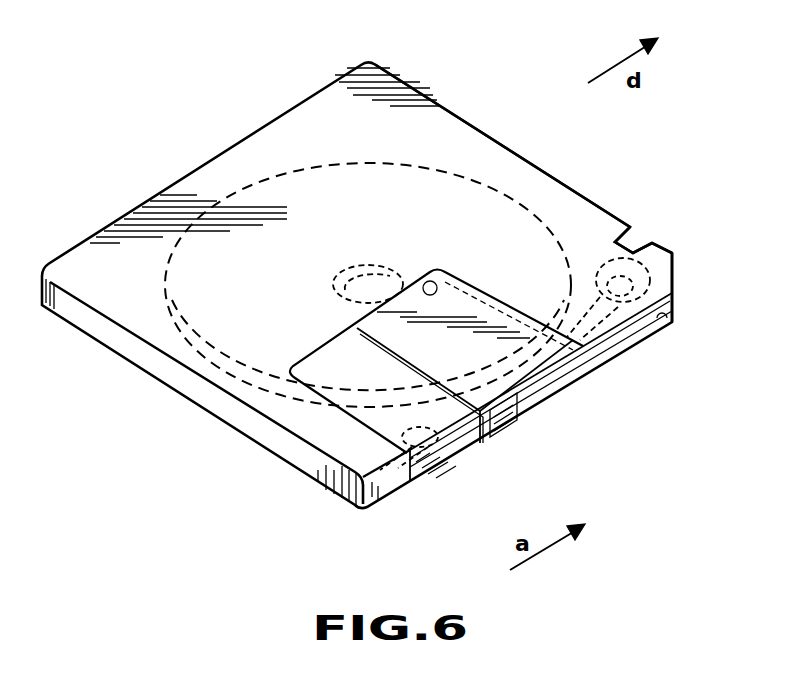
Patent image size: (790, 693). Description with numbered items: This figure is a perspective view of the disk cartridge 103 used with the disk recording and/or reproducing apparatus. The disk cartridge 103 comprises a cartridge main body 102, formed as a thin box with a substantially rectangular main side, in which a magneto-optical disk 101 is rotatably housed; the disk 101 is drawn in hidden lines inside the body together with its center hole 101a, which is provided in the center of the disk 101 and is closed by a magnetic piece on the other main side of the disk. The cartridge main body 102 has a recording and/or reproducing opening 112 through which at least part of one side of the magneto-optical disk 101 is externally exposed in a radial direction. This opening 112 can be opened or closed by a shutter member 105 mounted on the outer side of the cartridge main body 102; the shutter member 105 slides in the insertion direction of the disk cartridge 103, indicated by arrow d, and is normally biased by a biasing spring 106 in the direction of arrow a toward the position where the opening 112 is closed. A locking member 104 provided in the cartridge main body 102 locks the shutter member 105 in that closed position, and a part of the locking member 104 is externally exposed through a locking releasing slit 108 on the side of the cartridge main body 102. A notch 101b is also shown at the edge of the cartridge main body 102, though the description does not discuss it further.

The magneto-optical disk 101 is at (522, 225).
The center hole 101a is at (368, 283).
The notch 101b is at (636, 252).
The cartridge main body 102 is at (490, 132).
The disk cartridge 103 is at (457, 80).
The locking member 104 is at (622, 313).
The shutter member 105 is at (512, 393).
The biasing spring 106 is at (432, 433).
The locking releasing slit 108 is at (673, 325).
The recording and/or reproducing opening 112 is at (431, 281).